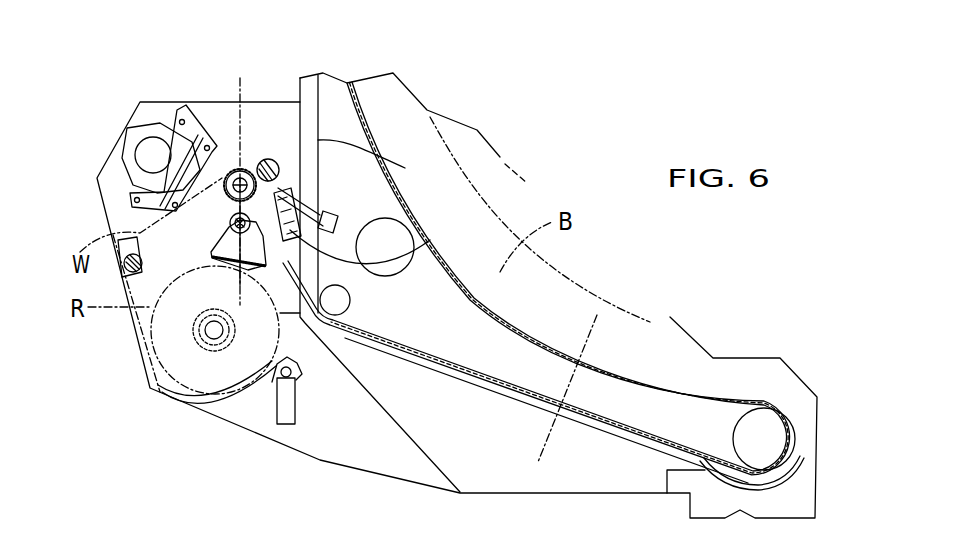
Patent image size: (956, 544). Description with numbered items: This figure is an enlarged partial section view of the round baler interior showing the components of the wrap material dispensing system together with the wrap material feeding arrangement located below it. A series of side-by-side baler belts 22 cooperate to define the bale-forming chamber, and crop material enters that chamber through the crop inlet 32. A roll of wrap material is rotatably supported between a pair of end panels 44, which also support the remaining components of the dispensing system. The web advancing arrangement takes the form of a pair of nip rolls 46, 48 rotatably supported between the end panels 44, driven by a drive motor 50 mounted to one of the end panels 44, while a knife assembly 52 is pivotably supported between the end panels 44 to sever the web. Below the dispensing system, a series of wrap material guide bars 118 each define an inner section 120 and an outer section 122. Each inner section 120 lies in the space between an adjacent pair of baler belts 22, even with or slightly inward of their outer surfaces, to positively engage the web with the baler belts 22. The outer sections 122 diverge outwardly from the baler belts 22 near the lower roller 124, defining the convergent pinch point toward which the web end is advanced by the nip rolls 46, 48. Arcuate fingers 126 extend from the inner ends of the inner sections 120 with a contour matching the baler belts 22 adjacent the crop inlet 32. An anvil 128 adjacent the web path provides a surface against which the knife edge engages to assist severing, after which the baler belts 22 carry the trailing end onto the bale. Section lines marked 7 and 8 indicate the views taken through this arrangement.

The baler belts 22 is at (377, 160).
The crop inlet 32 is at (807, 425).
The end panels 44 is at (110, 188).
The nip roll 46 is at (253, 170).
The nip roll 48 is at (270, 158).
The drive motor 50 is at (118, 148).
The knife assembly 52 is at (205, 217).
The wrap material guide bars 118 is at (340, 345).
The inner section 120 is at (461, 371).
The outer section 122 is at (276, 358).
The lower roller 124 is at (352, 298).
The arcuate fingers 126 is at (783, 474).
The anvil 128 is at (413, 254).
The section line 7 is at (527, 297).
The section line 8 is at (175, 87).